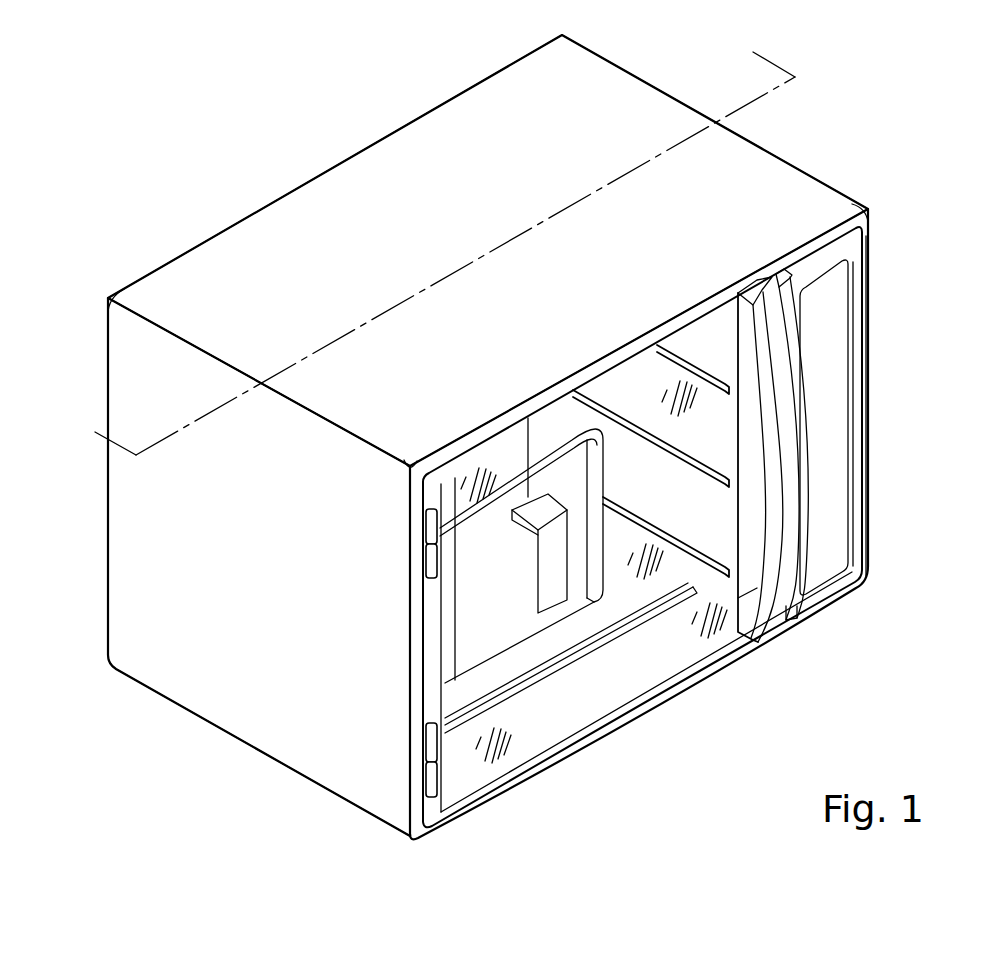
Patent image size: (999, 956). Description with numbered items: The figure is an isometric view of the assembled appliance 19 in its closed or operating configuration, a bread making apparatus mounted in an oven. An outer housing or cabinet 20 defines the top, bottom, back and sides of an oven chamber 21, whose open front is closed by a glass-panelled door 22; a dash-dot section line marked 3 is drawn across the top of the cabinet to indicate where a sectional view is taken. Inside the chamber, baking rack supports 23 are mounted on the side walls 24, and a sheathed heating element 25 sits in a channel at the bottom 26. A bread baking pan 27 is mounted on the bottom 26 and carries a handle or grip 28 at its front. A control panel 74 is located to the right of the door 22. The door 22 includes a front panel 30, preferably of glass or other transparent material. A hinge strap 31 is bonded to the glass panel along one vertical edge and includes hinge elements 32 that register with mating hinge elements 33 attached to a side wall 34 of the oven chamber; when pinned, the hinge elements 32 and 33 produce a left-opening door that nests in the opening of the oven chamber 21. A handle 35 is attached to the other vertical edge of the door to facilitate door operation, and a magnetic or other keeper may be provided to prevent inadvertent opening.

The assembled appliance 19 is at (840, 160).
The outer housing or cabinet 20 is at (355, 189).
The section line for FIG. 3 is at (425, 233).
The oven chamber 21 is at (713, 521).
The glass-panelled door 22 is at (596, 690).
The baking rack supports 23 is at (740, 603).
The side walls 24 is at (730, 397).
The sheathed heating element 25 is at (518, 680).
The bottom 26 is at (457, 692).
The bread baking pan 27 is at (583, 543).
The handle or grip 28 is at (557, 570).
The front panel 30 is at (470, 780).
The hinge strap 31 is at (440, 815).
The hinge elements 32 is at (424, 565).
The hinge elements 33 is at (424, 531).
The side wall 34 is at (357, 745).
The handle 35 is at (778, 603).
The control panel 74 is at (830, 289).